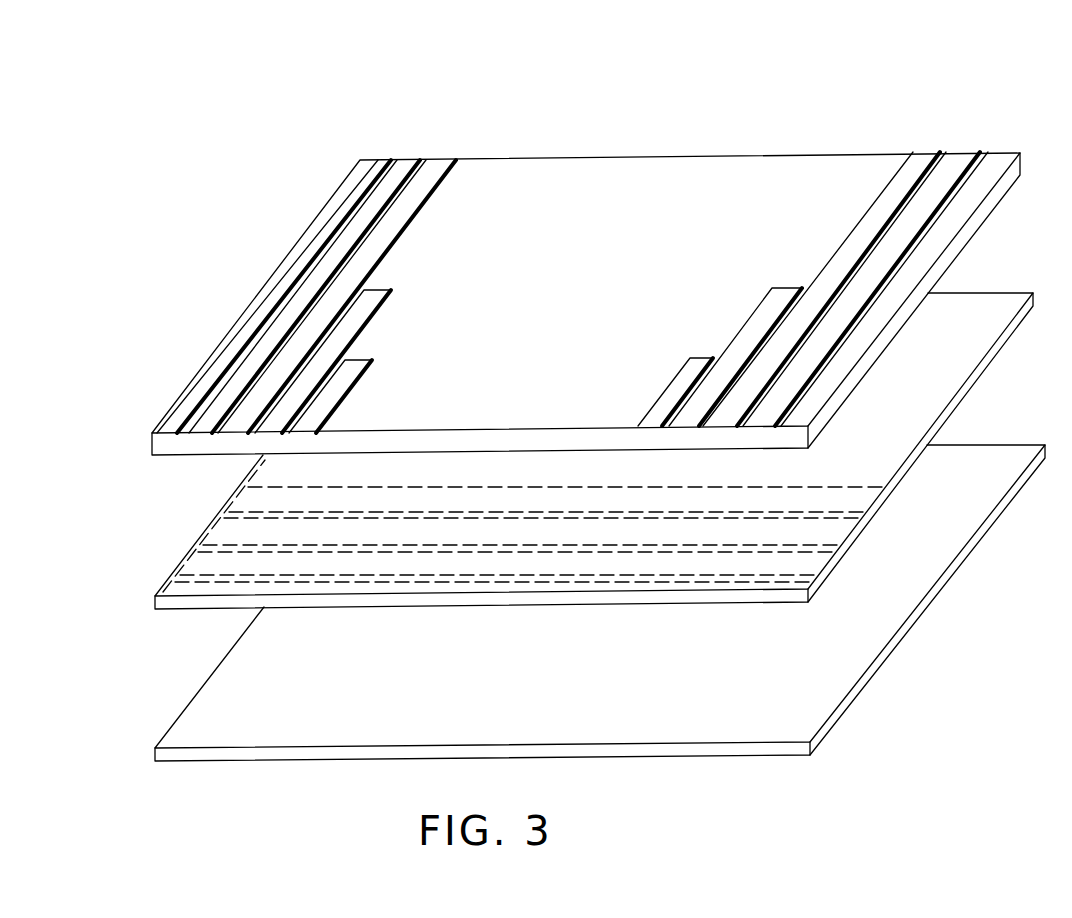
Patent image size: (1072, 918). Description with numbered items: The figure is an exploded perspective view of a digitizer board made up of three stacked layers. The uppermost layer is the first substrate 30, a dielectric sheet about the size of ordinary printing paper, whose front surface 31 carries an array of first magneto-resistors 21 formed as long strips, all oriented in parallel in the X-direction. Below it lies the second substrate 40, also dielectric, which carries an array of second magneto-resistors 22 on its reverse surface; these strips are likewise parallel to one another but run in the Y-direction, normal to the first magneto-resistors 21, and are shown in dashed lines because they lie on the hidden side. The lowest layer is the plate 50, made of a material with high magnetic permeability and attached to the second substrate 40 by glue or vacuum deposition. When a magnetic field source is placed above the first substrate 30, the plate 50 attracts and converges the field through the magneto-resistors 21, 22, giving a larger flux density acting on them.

The first substrate 30 is at (589, 157).
The first magneto-resistors 21 is at (343, 188).
The front surface 31 is at (481, 188).
The second substrate 40 is at (989, 293).
The second magneto-resistors 22 is at (203, 592).
The plate 50 is at (988, 443).